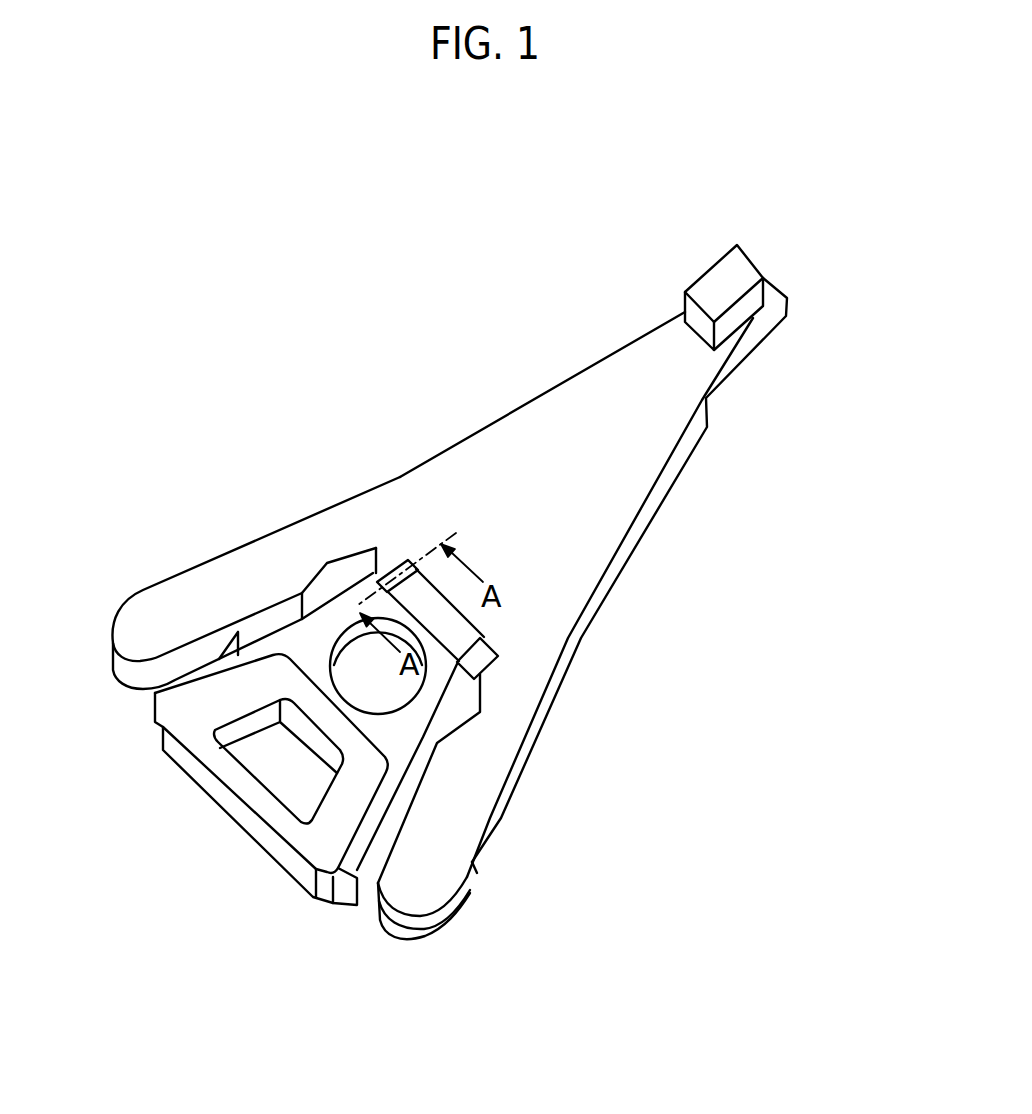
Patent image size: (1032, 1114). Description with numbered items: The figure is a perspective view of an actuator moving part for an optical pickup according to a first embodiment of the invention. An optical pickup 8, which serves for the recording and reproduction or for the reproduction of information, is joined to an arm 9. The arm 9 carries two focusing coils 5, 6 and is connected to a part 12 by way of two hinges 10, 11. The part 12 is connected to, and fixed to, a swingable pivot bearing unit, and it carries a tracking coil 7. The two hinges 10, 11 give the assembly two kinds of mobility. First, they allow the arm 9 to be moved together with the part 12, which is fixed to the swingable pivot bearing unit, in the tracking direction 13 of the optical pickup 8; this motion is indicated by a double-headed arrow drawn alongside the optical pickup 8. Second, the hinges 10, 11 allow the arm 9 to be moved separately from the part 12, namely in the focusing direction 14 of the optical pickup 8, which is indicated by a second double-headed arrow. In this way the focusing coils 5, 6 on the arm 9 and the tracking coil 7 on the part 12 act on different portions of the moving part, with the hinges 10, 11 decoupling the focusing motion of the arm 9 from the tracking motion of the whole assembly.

The focusing coil 5 is at (138, 678).
The focusing coil 6 is at (400, 932).
The tracking coil 7 is at (277, 800).
The optical pickup 8 is at (747, 317).
The arm 9 is at (632, 477).
The hinge 10 is at (483, 660).
The hinge 11 is at (396, 560).
The part 12 is at (413, 727).
The tracking direction 13 is at (770, 156).
The focusing direction 14 is at (677, 380).